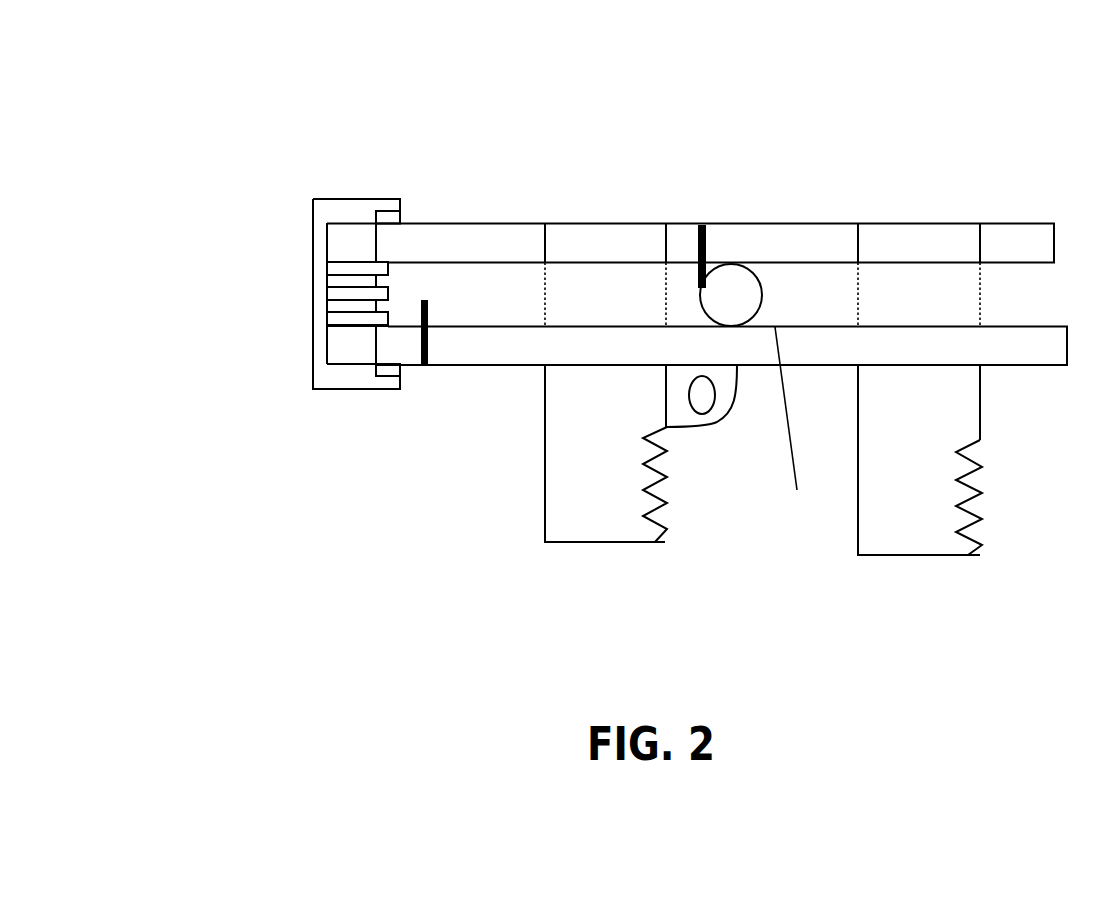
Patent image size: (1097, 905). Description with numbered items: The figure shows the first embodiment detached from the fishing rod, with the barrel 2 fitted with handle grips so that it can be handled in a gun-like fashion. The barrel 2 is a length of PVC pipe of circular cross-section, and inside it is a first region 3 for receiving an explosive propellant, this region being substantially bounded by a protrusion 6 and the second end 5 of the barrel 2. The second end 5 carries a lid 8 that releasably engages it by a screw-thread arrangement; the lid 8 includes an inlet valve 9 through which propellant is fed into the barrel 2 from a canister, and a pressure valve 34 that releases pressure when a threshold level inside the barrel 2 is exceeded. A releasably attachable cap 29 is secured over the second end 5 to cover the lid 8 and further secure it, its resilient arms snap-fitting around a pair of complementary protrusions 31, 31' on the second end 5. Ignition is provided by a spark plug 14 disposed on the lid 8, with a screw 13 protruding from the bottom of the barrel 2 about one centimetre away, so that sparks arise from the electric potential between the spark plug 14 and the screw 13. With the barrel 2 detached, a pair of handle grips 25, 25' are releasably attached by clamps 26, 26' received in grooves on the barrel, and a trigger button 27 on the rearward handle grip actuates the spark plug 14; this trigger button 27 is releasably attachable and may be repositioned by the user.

The second end 5 is at (253, 200).
The releasably attachable cap 29 is at (381, 205).
The complementary protrusion 31 is at (423, 150).
The complementary protrusion 31' is at (426, 449).
The inlet valve 9 is at (350, 268).
The pressure valve 34 is at (333, 300).
The spark plug 14 is at (333, 328).
The lid 8 is at (352, 355).
The screw 13 is at (427, 300).
The clamp 26 is at (715, 163).
The clamp 26' is at (925, 171).
The first region 3 is at (523, 327).
The protrusion 6 is at (706, 225).
The barrel 2 is at (763, 290).
The handle grip 25 is at (560, 483).
The handle grip 25' is at (910, 478).
The trigger button 27 is at (703, 413).